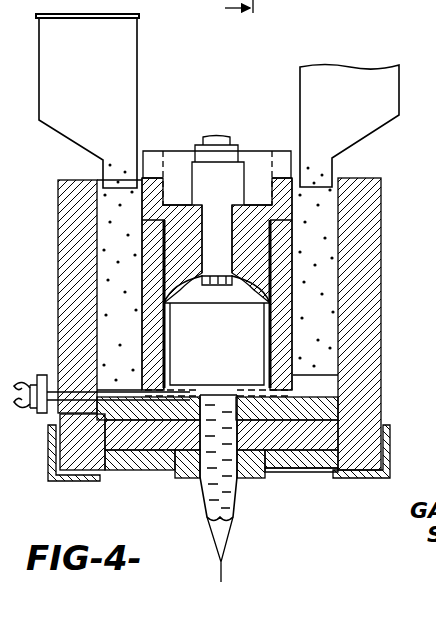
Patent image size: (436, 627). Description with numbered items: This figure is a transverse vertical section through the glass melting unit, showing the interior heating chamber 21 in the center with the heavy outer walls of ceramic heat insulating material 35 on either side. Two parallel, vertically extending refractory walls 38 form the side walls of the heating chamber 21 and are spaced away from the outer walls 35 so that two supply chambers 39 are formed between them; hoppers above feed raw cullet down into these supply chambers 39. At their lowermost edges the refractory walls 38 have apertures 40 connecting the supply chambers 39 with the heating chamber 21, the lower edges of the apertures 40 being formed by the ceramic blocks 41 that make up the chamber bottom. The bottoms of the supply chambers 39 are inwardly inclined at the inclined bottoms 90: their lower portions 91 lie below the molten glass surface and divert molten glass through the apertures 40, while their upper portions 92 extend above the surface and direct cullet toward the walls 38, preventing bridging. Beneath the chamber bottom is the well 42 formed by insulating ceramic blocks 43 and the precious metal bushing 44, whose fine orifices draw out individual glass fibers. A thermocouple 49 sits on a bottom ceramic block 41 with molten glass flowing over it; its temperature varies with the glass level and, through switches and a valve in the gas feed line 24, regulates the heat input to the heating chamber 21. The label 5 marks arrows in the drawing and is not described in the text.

The heating chamber 21 is at (272, 307).
The gas feed line 24 is at (226, 139).
The heat insulating material 35 is at (381, 242).
The refractory walls 38 is at (168, 356).
The supply chambers 39 is at (108, 258).
The apertures 40 is at (173, 386).
The ceramic blocks 41 is at (247, 400).
The well 42 is at (182, 478).
The insulating ceramic blocks 43 is at (326, 428).
The precious metal bushing 44 is at (205, 497).
The thermocouple 49 is at (197, 398).
The inclined bottoms 90 is at (316, 378).
The lower portions 91 is at (291, 386).
The upper portions 92 is at (340, 358).
The flow direction 5 is at (125, 346).